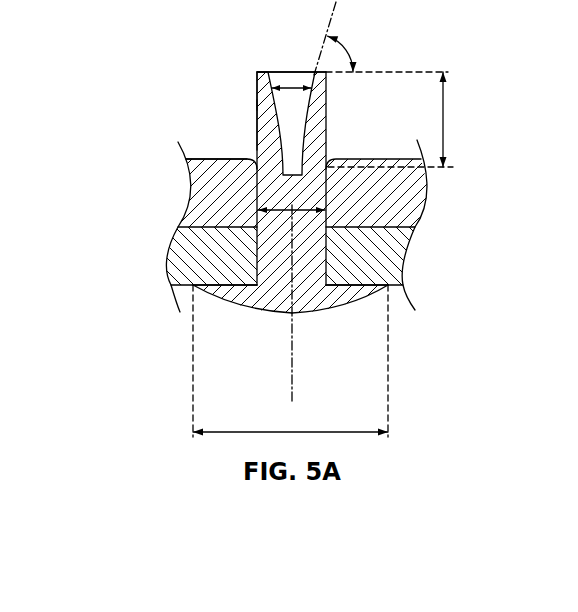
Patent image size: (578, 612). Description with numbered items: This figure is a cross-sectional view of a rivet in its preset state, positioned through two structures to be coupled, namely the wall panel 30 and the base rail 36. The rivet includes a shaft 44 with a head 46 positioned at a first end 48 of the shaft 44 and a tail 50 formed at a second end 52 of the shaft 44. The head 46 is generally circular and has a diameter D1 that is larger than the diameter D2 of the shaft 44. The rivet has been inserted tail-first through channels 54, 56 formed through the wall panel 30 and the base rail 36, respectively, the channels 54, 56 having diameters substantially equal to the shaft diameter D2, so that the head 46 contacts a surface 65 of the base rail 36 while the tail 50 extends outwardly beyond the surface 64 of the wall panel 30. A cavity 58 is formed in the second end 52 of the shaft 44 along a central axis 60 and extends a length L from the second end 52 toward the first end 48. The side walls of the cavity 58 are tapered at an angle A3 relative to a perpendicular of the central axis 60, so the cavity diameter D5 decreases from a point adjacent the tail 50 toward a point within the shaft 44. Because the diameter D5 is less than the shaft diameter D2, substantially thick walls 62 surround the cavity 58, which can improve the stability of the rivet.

The wall panel 30 is at (210, 200).
The base rail 36 is at (240, 273).
The shaft 44 is at (275, 247).
The head 46 is at (222, 307).
The first end 48 is at (264, 299).
The tail 50 is at (262, 72).
The second end 52 is at (283, 62).
The channel 54 is at (333, 190).
The channel 56 is at (333, 255).
The cavity 58 is at (287, 108).
The central axis 60 is at (292, 360).
The walls 62 is at (272, 122).
The surface 64 is at (208, 152).
The surface 65 is at (392, 286).
The head diameter D1 is at (290, 361).
The shaft diameter D2 is at (291, 224).
The cavity diameter D5 is at (292, 84).
The cavity length L is at (393, 119).
The taper angle A3 is at (379, 38).